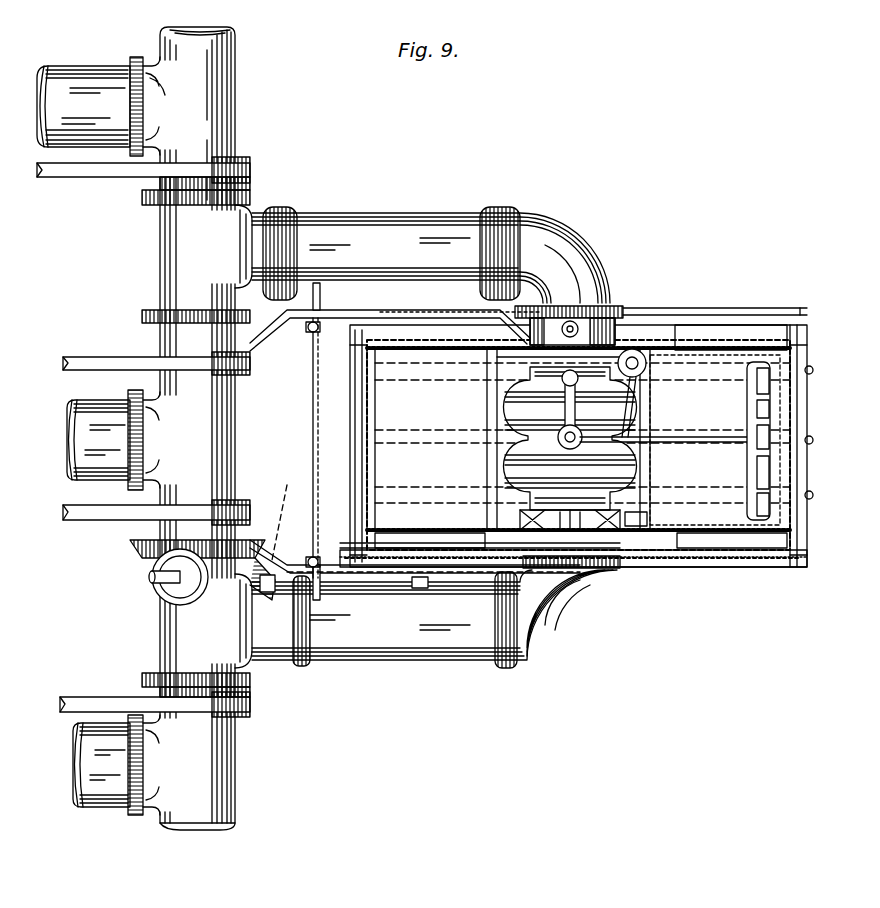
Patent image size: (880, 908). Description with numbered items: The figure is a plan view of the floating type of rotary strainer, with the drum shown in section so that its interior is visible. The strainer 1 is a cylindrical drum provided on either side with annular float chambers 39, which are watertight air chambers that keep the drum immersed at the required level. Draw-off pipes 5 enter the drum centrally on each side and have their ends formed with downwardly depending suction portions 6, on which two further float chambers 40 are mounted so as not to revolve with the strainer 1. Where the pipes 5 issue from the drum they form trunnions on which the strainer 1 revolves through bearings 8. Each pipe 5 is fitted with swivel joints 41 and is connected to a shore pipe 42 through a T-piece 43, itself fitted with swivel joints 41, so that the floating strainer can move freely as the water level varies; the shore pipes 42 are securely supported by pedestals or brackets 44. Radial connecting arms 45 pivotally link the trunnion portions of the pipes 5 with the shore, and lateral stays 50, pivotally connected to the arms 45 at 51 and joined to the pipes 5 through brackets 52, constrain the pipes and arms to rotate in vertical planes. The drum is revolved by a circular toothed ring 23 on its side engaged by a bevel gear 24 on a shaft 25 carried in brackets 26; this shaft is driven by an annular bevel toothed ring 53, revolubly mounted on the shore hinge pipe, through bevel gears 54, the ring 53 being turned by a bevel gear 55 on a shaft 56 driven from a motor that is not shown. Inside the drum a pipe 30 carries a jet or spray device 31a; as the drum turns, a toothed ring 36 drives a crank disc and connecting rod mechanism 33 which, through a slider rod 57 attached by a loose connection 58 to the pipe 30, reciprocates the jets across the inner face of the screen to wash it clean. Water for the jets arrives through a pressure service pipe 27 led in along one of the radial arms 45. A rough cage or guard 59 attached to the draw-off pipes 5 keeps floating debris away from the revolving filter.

The strainer 1 is at (581, 446).
The pipes 5 is at (492, 242).
The suction pipes 6 is at (503, 407).
The bearings 8 is at (612, 413).
The toothed ring 23 is at (648, 568).
The bevel wheel 24 is at (447, 568).
The shaft 25 is at (390, 570).
The brackets 26 is at (424, 613).
The pressure service pipe 27 is at (612, 297).
The second pipe 30 is at (745, 446).
The jet or spray device 31a is at (750, 376).
The crank disc and connecting rod mechanism 33 is at (642, 375).
The toothed ring 36 is at (500, 356).
The annular float chambers 39 is at (523, 262).
The float chambers 40 is at (715, 360).
The swivel joints 41 is at (145, 308).
The shore pipe 42 is at (215, 88).
The T-pieces 43 is at (197, 255).
The pedestals or brackets 44 is at (93, 178).
The radial connecting arms 45 is at (381, 312).
The lateral stays 50 is at (312, 402).
The pivotal connection 51 is at (306, 330).
The brackets 52 is at (320, 285).
The annular bevel toothed ring 53 is at (135, 548).
The bevel gears 54 is at (268, 584).
The bevel gear 55 is at (160, 590).
The shaft 56 is at (150, 576).
The slider rod 57 is at (630, 420).
The loose connection 58 is at (642, 447).
The cage or guard 59 is at (633, 305).